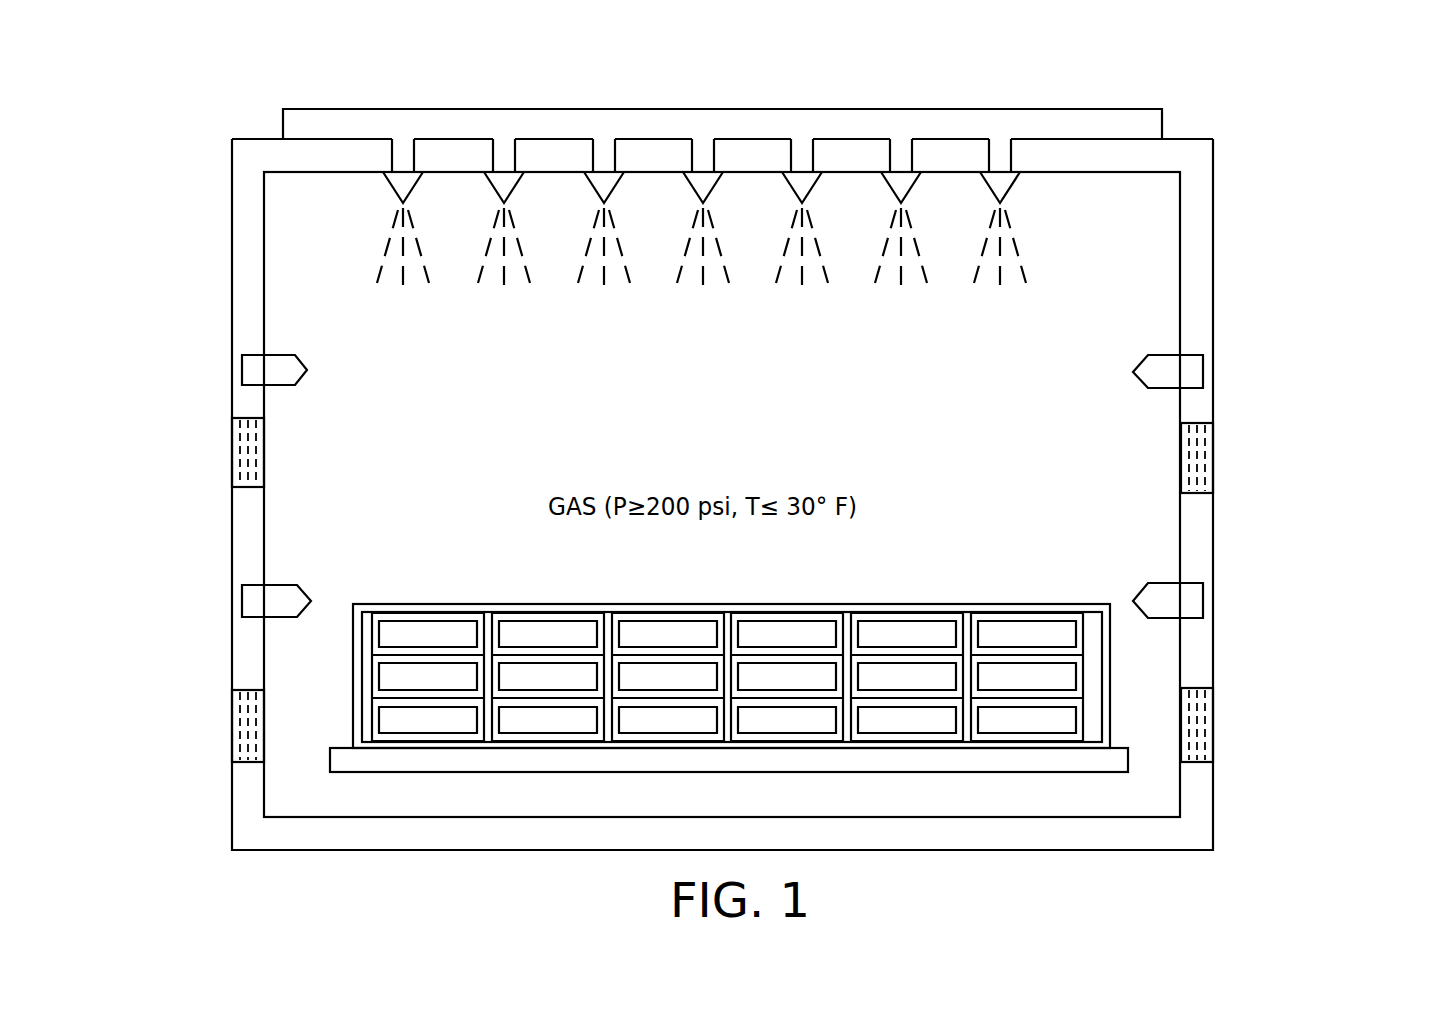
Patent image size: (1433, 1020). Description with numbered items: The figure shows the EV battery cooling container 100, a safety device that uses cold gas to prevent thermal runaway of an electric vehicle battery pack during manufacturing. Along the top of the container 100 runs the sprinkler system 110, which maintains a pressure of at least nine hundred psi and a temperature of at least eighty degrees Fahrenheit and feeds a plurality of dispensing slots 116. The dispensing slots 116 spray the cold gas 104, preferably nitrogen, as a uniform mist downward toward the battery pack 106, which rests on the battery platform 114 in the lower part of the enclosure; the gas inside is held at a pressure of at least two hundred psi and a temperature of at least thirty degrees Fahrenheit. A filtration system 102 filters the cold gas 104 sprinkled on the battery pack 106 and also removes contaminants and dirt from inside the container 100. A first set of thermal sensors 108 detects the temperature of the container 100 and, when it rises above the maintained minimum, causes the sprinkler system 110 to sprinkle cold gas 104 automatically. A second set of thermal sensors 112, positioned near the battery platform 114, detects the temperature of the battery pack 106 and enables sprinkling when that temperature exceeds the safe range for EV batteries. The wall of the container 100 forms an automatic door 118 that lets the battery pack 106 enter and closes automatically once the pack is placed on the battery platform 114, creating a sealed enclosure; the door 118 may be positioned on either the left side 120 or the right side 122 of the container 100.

The EV battery cooling container 100 is at (204, 152).
The filtration system 102 is at (245, 465).
The cold gas 104 is at (418, 280).
The battery pack 106 is at (423, 628).
The first set of thermal sensors 108 is at (263, 370).
The sprinkler system 110 is at (468, 130).
The second set of thermal sensors 112 is at (267, 602).
The battery platform 114 is at (436, 762).
The dispensing slots 116 is at (405, 167).
The automatic door 118 is at (1192, 237).
The left side 120 is at (160, 628).
The right side 122 is at (1250, 660).